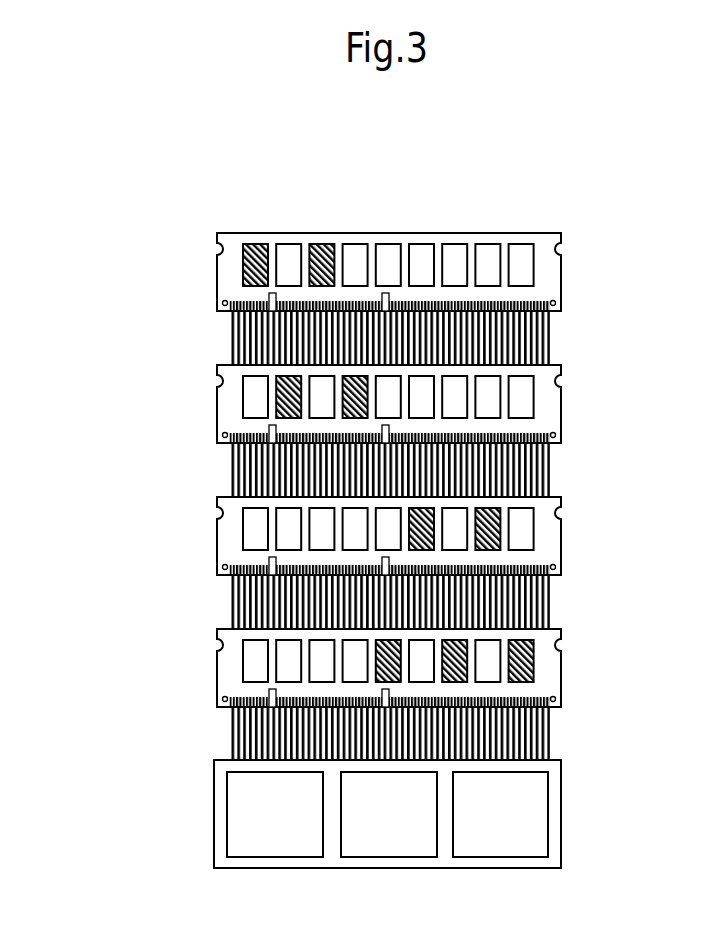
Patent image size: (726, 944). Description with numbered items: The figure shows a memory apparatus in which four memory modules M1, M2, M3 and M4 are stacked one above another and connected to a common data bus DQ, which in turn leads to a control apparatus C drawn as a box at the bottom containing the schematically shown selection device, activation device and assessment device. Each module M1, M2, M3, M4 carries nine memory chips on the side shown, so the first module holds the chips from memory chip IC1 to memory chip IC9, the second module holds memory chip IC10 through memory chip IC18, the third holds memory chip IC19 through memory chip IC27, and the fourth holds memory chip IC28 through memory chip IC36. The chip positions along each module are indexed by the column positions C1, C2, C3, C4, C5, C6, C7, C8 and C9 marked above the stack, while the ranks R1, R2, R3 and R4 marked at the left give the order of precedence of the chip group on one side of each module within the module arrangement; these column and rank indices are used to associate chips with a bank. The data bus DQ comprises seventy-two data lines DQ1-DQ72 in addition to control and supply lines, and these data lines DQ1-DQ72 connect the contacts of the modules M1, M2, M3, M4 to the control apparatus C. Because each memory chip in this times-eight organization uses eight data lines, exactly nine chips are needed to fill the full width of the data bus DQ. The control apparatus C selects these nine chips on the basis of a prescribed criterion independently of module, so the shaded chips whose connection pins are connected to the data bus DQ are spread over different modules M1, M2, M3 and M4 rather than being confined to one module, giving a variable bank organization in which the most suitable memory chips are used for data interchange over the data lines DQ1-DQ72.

The chip position C1 is at (256, 188).
The chip position C2 is at (289, 188).
The chip position C3 is at (322, 188).
The chip position C4 is at (355, 188).
The chip position C5 is at (388, 188).
The chip position C6 is at (422, 188).
The chip position C7 is at (455, 188).
The chip position C8 is at (488, 188).
The chip position C9 is at (521, 188).
The rank R1 is at (148, 271).
The rank R2 is at (148, 393).
The rank R3 is at (148, 532).
The rank R4 is at (148, 665).
The module M1 is at (562, 284).
The module M2 is at (562, 413).
The module M3 is at (562, 547).
The module M4 is at (562, 677).
The memory chip IC1 is at (243, 270).
The memory chip IC9 is at (535, 258).
The memory chip IC10 is at (243, 398).
The memory chip IC18 is at (535, 398).
The memory chip IC19 is at (243, 521).
The memory chip IC27 is at (535, 522).
The memory chip IC28 is at (243, 650).
The memory chip IC36 is at (535, 653).
The data bus DQ is at (566, 342).
The data lines DQ1-DQ72 is at (505, 736).
The control apparatus C is at (561, 820).